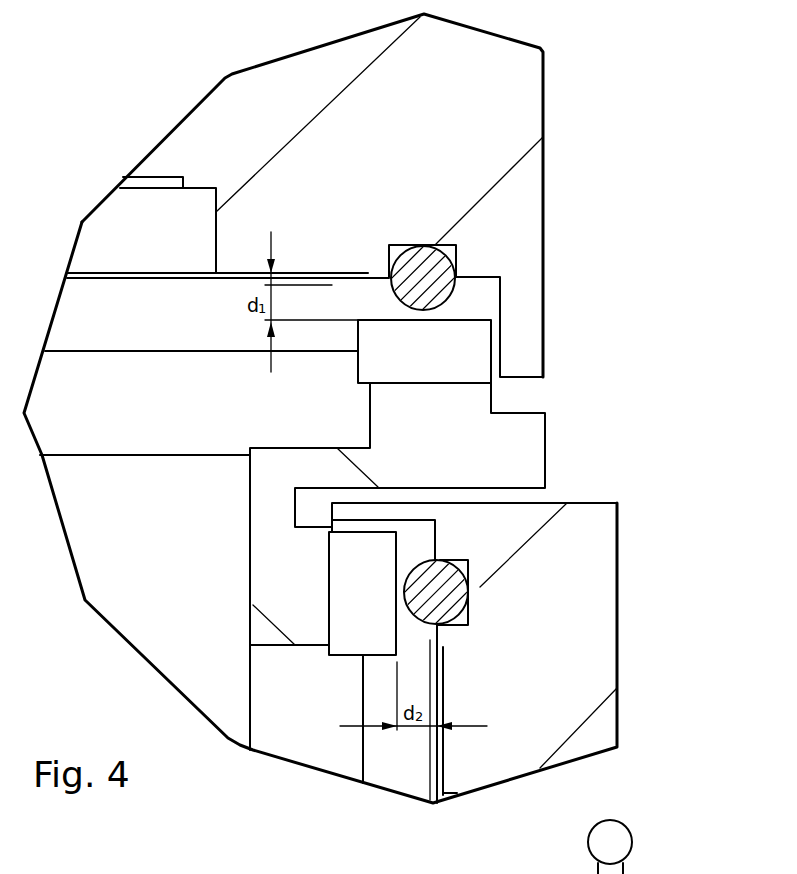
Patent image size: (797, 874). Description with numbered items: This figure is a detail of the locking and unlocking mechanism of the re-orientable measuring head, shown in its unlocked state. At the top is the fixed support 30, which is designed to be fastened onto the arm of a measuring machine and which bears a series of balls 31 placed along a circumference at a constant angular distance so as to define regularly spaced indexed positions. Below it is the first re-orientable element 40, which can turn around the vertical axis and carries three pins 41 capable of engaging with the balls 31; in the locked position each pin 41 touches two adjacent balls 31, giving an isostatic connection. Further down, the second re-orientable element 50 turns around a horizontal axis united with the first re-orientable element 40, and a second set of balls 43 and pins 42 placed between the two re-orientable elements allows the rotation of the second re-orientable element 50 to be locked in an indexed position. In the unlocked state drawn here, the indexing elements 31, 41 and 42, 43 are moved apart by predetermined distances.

The support 30 is at (490, 109).
The balls 31 is at (432, 273).
The first re-orientable element 40 is at (503, 457).
The pins 41 is at (425, 350).
The pins 42 is at (358, 630).
The balls 43 is at (445, 590).
The second re-orientable element 50 is at (547, 673).